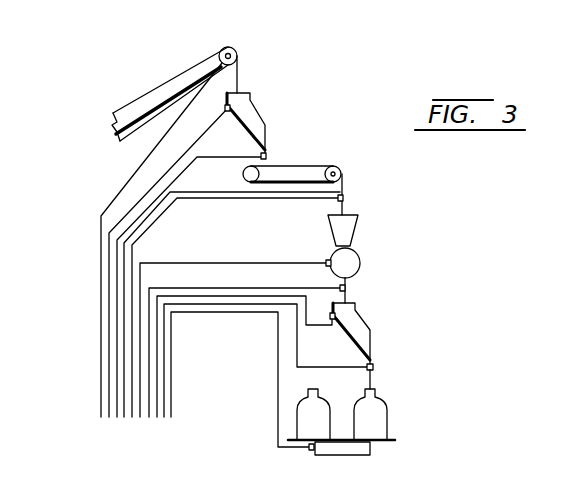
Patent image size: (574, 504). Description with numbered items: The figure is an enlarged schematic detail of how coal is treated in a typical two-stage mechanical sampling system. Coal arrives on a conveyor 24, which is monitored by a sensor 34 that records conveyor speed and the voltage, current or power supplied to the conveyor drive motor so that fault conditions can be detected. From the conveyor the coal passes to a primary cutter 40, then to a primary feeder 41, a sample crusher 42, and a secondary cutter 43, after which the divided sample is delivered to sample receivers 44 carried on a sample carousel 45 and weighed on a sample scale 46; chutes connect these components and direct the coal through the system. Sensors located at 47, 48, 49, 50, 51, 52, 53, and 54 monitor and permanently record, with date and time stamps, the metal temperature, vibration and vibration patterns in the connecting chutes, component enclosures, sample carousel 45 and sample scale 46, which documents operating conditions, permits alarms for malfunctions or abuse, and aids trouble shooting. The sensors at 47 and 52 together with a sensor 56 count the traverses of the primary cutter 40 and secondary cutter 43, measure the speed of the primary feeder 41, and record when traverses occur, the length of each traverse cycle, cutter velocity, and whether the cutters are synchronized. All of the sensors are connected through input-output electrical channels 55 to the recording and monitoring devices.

The conveyor 24 is at (162, 84).
The sensor 34 is at (236, 49).
The primary cutter 40 is at (258, 112).
The primary feeder 41 is at (298, 164).
The sample crusher 42 is at (360, 258).
The secondary cutter 43 is at (367, 325).
The sample receivers 44 is at (323, 403).
The sample carousel 45 is at (395, 438).
The sample scale 46 is at (350, 456).
The sensor 47 is at (229, 111).
The sensor 48 is at (265, 155).
The sensor 49 is at (344, 197).
The sensor 50 is at (327, 259).
The sensor 51 is at (340, 287).
The sensor 52 is at (333, 320).
The sensor 53 is at (373, 367).
The sensor 54 is at (311, 451).
The input-output electrical channels 55 is at (97, 378).
The sensor 56 is at (342, 170).